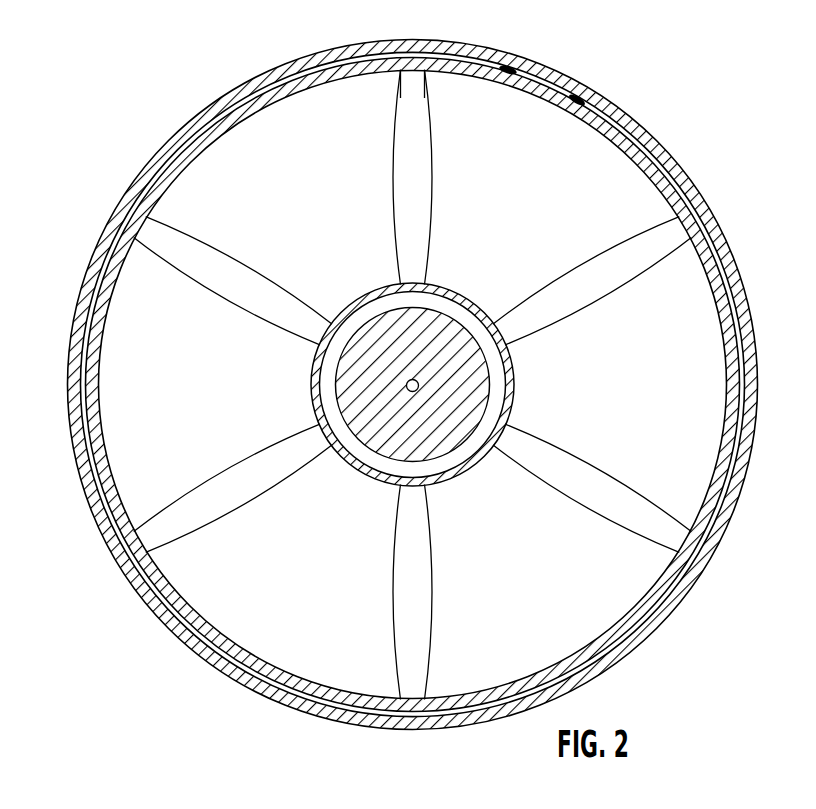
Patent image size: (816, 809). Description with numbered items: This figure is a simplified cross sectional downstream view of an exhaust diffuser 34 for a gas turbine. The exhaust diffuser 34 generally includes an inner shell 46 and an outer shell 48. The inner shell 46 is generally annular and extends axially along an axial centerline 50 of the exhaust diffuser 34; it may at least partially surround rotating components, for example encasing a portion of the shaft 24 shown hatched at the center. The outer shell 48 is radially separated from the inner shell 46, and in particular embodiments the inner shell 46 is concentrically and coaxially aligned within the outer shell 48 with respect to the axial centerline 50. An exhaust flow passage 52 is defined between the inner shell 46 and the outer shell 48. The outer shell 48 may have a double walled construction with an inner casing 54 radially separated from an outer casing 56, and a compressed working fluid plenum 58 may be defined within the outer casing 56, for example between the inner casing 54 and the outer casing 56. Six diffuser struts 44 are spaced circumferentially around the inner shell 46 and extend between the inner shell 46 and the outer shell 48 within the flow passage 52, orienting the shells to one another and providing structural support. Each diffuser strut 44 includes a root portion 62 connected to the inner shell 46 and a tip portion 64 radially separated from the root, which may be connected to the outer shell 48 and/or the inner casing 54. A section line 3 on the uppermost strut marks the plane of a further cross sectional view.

The section line 3- 3 is at (372, 160).
The shaft 24 is at (438, 433).
The exhaust diffuser 34 is at (150, 84).
The diffuser struts 44 is at (393, 147).
The inner shell 46 is at (411, 388).
The outer shell 48 is at (413, 366).
The axial centerline 50 is at (419, 388).
The exhaust flow passage 52 is at (252, 207).
The inner casing 54 is at (507, 79).
The outer casing 56 is at (430, 43).
The compressed working fluid plenum 58 is at (540, 78).
The root portion 62 is at (425, 283).
The tip portion 64 is at (427, 72).